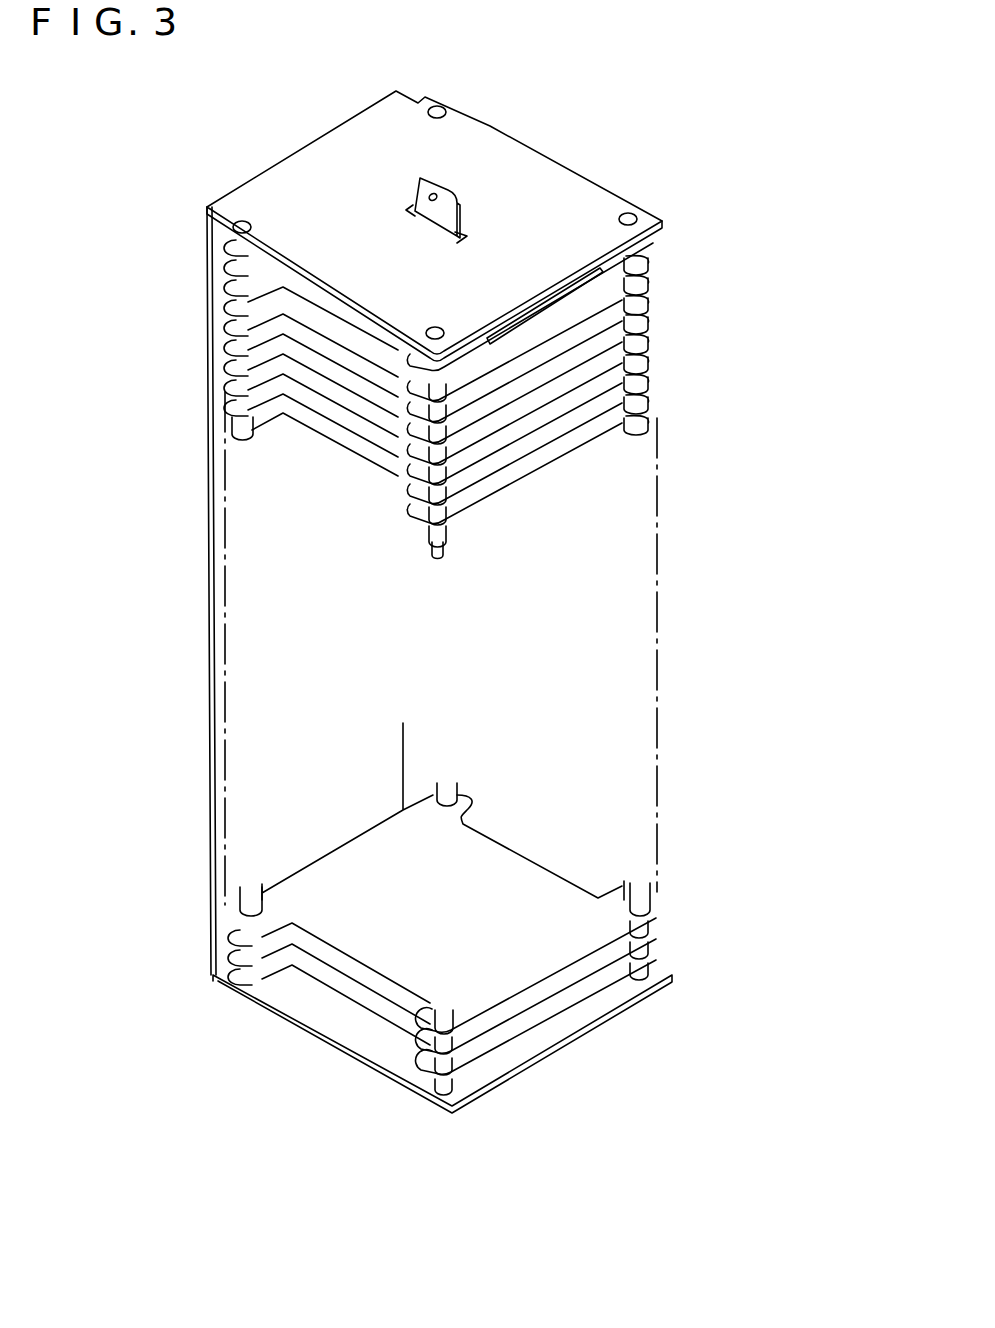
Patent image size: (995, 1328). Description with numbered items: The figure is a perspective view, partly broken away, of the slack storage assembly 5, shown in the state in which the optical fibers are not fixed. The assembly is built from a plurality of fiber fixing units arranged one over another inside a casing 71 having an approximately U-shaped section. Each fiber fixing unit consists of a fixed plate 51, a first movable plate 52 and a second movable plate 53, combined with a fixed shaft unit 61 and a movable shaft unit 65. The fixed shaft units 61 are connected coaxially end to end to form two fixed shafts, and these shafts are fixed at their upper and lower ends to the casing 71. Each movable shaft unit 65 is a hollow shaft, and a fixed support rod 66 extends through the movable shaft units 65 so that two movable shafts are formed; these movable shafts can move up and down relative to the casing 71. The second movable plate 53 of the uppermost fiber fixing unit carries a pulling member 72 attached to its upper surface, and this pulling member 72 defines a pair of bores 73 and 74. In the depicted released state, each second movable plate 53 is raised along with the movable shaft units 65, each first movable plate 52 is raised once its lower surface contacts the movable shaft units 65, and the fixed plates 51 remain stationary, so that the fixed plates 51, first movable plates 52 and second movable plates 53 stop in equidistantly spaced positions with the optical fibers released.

The slack storage assembly 5 is at (602, 139).
The casing 71 is at (283, 177).
The pulling member 72 is at (452, 213).
The bore 73 is at (437, 194).
The bore 74 is at (430, 228).
The second movable plate 53 is at (653, 242).
The first movable plate 52 is at (650, 255).
The fixed plate 51 is at (650, 275).
The fixed shaft unit 61 is at (648, 393).
The movable shaft unit 65 is at (430, 512).
The fixed support rod 66 is at (447, 550).